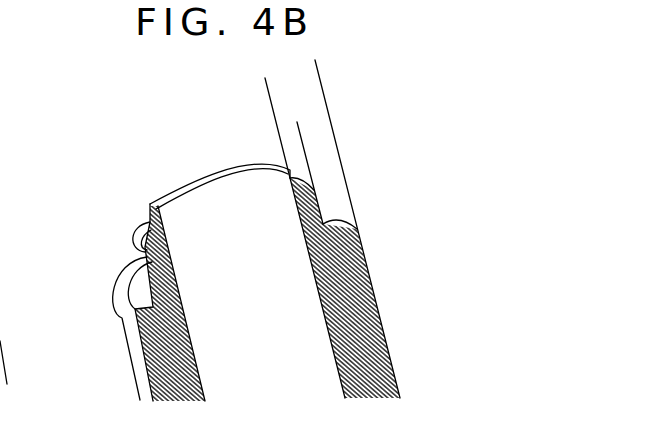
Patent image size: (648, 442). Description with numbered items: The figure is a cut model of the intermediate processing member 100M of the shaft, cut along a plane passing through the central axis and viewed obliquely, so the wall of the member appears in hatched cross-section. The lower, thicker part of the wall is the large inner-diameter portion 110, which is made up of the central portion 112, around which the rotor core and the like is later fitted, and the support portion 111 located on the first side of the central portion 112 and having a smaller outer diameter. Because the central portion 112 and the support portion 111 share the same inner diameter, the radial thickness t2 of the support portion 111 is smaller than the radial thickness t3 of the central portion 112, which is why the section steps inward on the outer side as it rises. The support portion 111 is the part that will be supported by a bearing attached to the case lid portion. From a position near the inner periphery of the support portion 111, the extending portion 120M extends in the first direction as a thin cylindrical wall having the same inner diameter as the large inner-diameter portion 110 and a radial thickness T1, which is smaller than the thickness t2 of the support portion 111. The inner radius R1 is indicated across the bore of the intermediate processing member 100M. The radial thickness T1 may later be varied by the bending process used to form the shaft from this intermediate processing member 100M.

The intermediate processing member 100M is at (135, 131).
The extending portion 120M is at (147, 210).
The large inner-diameter portion 110 is at (62, 243).
The support portion 111 is at (137, 261).
The central portion 112 is at (120, 333).
The radial thickness of the extending portion T1 is at (156, 204).
The radial thickness of the support portion t2 is at (297, 122).
The radial thickness of the central portion t3 is at (313, 63).
The inner radius R1 is at (305, 252).